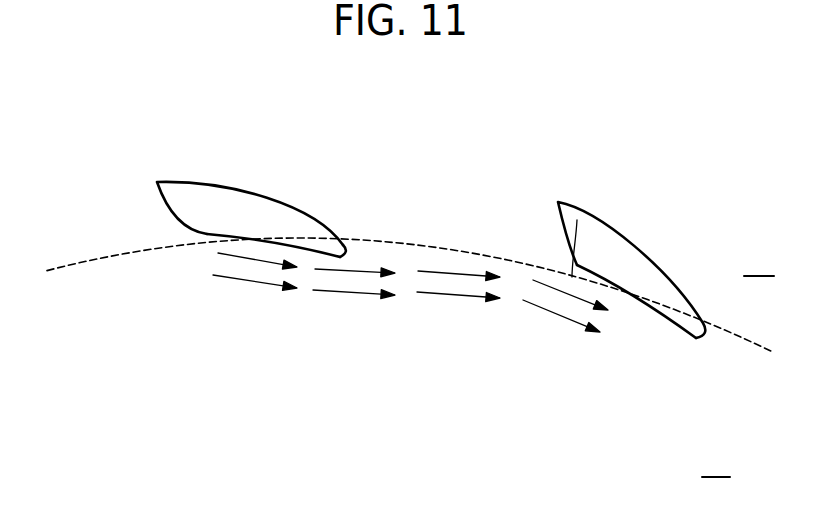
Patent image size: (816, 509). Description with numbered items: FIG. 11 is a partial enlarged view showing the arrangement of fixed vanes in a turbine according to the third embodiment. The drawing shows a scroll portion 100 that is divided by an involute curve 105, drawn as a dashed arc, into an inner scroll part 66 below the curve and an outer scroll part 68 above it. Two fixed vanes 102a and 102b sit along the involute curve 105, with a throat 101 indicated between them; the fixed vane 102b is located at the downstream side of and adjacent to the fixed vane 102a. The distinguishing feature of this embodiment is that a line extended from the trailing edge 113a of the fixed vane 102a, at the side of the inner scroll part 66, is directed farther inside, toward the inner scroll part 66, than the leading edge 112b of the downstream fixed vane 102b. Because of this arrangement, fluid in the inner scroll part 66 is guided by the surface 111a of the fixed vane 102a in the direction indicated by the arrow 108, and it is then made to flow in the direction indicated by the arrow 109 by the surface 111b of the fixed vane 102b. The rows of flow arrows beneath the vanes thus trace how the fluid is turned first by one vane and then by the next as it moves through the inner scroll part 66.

The scroll portion 100 is at (112, 103).
The throat 101 is at (449, 220).
The fixed vane 102a is at (270, 185).
The fixed vane 102b is at (636, 229).
The involute curve 105 is at (119, 265).
The arrow 108 is at (443, 295).
The arrow 109 is at (553, 317).
The surface 111a is at (303, 248).
The surface 111b is at (650, 302).
The leading edge 112b is at (563, 235).
The trailing edge 113a is at (358, 247).
The outer scroll part 68 is at (759, 262).
The inner scroll part 66 is at (716, 463).